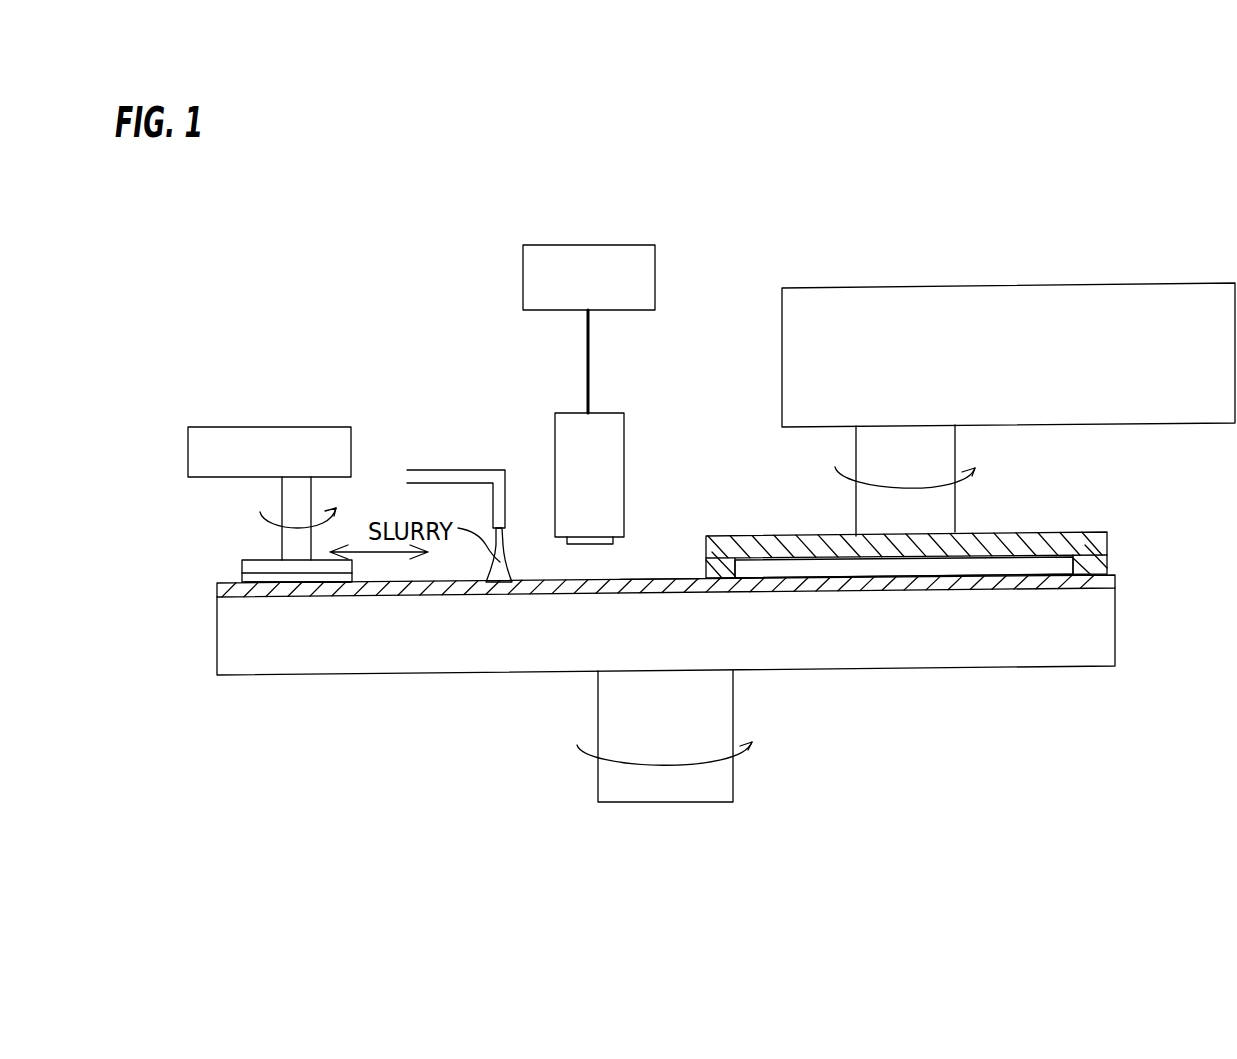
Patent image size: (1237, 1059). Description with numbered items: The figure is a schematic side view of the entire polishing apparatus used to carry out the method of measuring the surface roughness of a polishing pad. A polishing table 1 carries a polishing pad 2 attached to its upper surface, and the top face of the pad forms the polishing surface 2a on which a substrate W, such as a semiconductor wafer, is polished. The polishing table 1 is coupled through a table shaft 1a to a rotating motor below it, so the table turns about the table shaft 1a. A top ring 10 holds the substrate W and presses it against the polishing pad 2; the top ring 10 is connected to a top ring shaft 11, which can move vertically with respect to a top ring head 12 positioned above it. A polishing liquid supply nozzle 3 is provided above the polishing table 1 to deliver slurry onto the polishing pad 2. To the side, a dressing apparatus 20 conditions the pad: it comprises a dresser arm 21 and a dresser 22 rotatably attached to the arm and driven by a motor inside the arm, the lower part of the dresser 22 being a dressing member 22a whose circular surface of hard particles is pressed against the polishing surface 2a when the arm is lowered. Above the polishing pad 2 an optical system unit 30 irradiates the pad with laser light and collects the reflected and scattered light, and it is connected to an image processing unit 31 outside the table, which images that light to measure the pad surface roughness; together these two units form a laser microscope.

The polishing table 1 is at (1103, 641).
The table shaft 1a is at (617, 722).
The polishing pad 2 is at (1115, 580).
The polishing surface 2a is at (683, 578).
The polishing liquid supply nozzle 3 is at (493, 507).
The top ring 10 is at (1107, 546).
The top ring shaft 11 is at (938, 508).
The top ring head 12 is at (983, 310).
The dressing apparatus 20 is at (227, 510).
The dresser arm 21 is at (285, 438).
The dresser 22 is at (240, 568).
The dressing member 22a is at (265, 582).
The optical system unit 30 is at (556, 420).
The image processing unit 31 is at (545, 245).
The substrate W is at (1053, 565).